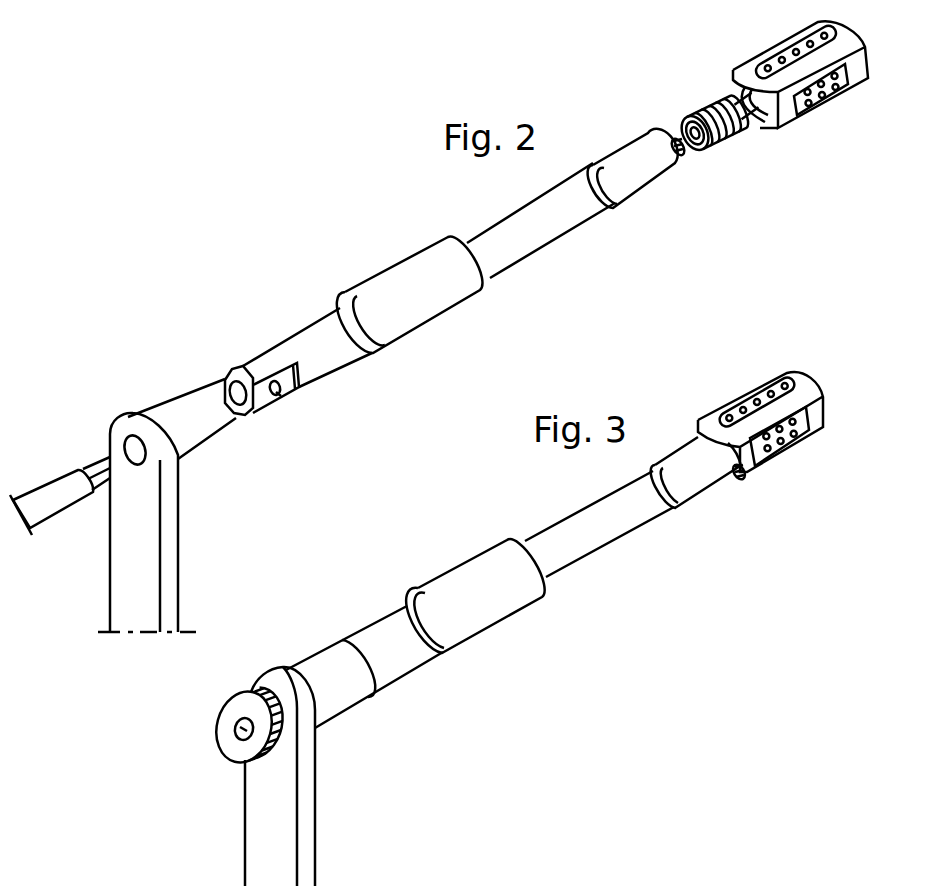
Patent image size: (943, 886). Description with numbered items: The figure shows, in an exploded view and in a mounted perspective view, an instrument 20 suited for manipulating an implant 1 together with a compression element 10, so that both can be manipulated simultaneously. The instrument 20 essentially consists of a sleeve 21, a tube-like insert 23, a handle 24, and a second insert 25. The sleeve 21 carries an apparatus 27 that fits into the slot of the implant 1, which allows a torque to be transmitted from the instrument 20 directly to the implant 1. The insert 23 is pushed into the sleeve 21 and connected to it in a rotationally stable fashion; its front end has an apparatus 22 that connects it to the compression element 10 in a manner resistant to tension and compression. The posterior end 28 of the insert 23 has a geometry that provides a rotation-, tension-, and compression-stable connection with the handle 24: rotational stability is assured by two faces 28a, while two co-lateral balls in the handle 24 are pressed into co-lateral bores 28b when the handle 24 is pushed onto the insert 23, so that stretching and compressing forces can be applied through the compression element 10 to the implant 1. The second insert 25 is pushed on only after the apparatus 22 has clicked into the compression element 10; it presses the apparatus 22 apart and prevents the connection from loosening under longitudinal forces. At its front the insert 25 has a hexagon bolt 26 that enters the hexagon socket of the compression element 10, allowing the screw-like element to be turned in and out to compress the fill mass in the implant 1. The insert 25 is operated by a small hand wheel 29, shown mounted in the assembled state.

In FIG. 2, the implant 1 is at (745, 53).
In FIG. 3, the implant 1 is at (698, 405).
In FIG. 2, the compression element 10 is at (703, 103).
In FIG. 2, the instrument 20 is at (363, 255).
In FIG. 3, the instrument 20 is at (430, 550).
In FIG. 2, the sleeve 21 is at (545, 240).
In FIG. 3, the sleeve 21 is at (617, 527).
In FIG. 2, the apparatus 22 is at (693, 152).
In FIG. 2, the tube-like insert 23 is at (340, 352).
In FIG. 3, the tube-like insert 23 is at (415, 643).
In FIG. 2, the handle 24 is at (182, 528).
In FIG. 3, the handle 24 is at (317, 805).
In FIG. 2, the second insert 25 is at (53, 495).
In FIG. 3, the second insert 25 is at (240, 727).
In FIG. 2, the hexagon bolt 26 is at (90, 462).
In FIG. 2, the apparatus 27 is at (681, 158).
In FIG. 3, the apparatus 27 is at (746, 480).
In FIG. 2, the posterior end 28 is at (255, 370).
In FIG. 2, the faces 28a is at (220, 378).
In FIG. 2, the co-lateral bores 28b is at (282, 395).
In FIG. 3, the hand wheel 29 is at (237, 742).